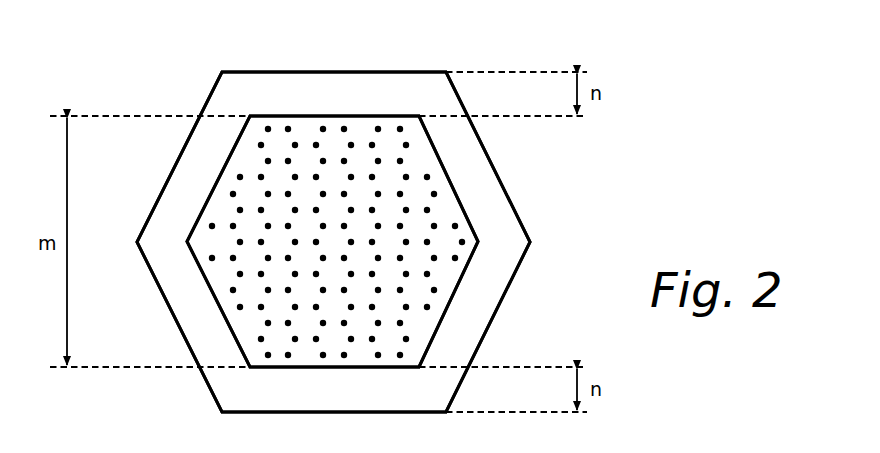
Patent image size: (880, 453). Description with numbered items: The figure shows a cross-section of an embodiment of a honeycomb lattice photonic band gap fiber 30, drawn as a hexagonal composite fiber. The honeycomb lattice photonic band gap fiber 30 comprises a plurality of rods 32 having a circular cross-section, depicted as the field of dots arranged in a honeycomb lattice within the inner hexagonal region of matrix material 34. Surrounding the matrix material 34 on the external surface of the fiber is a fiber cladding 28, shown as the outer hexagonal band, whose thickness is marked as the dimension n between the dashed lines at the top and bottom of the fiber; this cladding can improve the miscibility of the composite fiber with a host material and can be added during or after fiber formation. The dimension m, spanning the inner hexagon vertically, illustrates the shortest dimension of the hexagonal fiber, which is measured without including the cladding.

The fiber cladding 28 is at (339, 101).
The honeycomb lattice photonic band gap fiber 30 is at (592, 187).
The rods 32 is at (260, 337).
The matrix material 34 is at (252, 158).